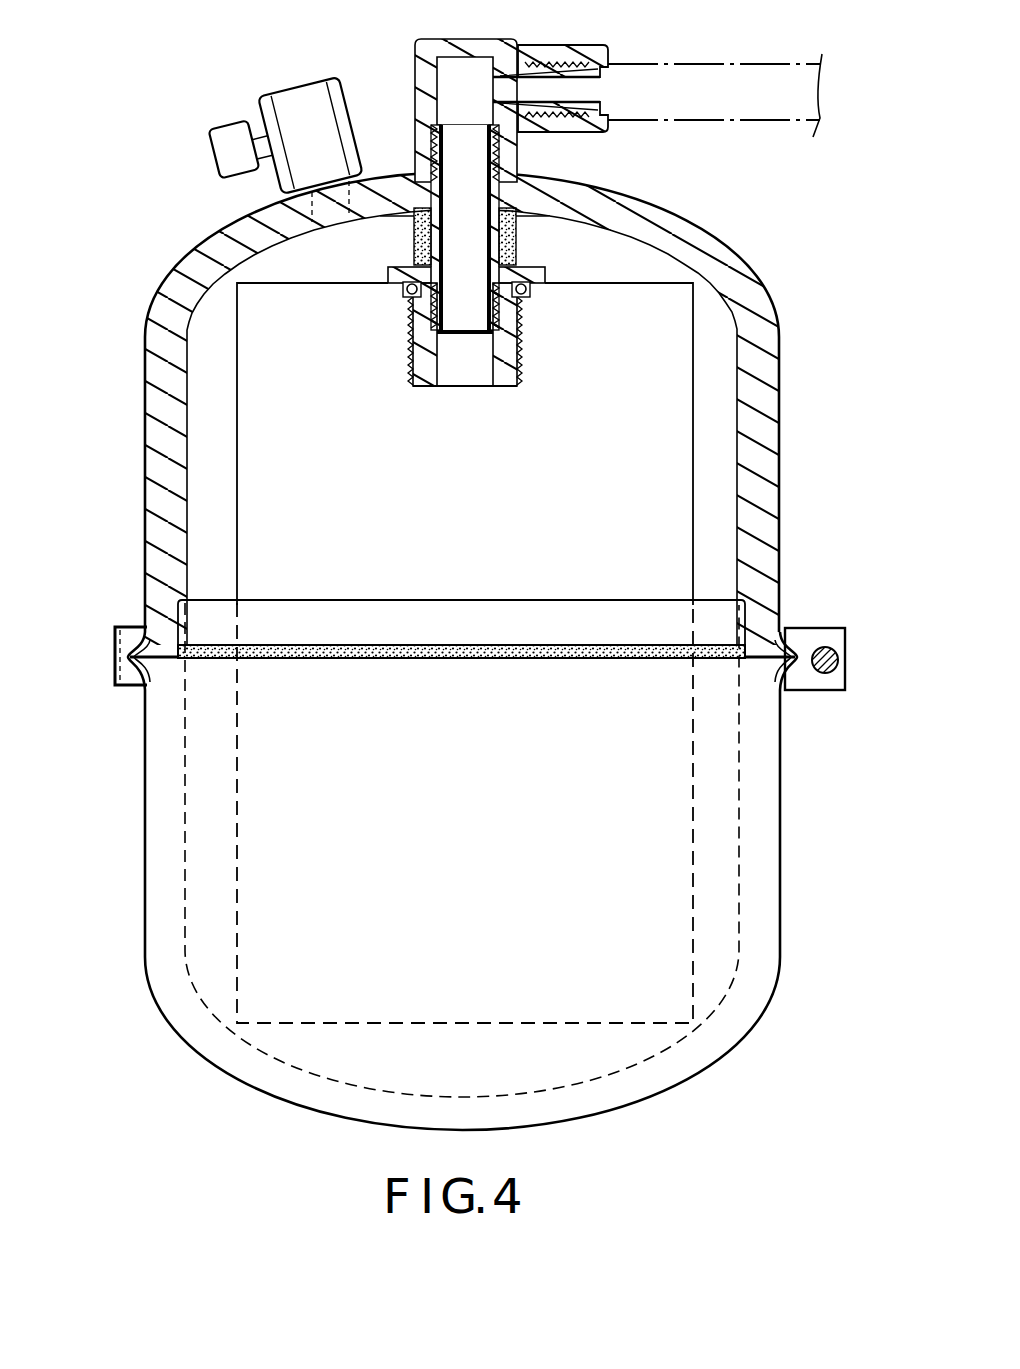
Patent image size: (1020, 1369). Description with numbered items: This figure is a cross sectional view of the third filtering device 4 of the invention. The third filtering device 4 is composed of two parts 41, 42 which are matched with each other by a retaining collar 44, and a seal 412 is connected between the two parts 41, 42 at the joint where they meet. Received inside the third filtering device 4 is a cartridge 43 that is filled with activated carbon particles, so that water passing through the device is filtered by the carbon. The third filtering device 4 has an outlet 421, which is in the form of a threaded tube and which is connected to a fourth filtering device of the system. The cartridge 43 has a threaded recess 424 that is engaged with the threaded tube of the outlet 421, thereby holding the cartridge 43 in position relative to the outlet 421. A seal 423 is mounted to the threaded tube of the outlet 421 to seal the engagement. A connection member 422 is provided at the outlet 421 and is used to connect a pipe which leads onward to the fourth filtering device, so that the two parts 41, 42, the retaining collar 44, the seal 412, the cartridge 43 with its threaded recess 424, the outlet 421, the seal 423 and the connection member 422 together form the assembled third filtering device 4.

The third filtering device 4 is at (127, 430).
The part 41 is at (158, 955).
The part 42 is at (182, 283).
The cartridge 43 is at (675, 428).
The retaining collar 44 is at (115, 677).
The seal 412 is at (715, 650).
The outlet 421 is at (465, 313).
The connection member 422 is at (500, 40).
The seal 423 is at (513, 243).
The threaded recess 424 is at (417, 345).